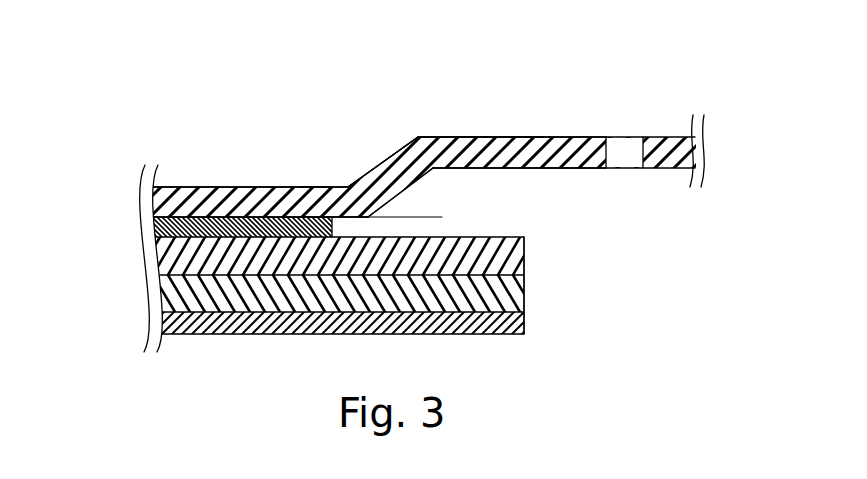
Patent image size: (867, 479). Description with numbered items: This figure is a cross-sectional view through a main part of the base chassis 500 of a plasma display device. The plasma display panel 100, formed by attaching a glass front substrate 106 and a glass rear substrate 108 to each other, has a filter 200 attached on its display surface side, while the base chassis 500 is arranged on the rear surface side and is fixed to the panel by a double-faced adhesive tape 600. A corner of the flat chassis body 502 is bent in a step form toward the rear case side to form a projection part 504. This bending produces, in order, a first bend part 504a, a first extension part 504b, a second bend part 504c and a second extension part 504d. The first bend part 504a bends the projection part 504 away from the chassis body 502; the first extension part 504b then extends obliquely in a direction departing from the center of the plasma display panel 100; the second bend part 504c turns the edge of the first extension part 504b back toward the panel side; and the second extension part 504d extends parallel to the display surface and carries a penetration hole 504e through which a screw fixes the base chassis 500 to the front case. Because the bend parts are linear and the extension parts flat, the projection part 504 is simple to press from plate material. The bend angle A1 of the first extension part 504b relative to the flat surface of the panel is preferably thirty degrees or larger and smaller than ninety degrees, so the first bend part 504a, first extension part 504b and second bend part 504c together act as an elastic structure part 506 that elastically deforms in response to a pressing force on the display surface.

The plasma display panel 100 is at (620, 236).
The front substrate 106 is at (524, 293).
The rear substrate 108 is at (524, 252).
The filter 200 is at (525, 329).
The base chassis 500 is at (274, 100).
The chassis body 502 is at (228, 186).
The projection part 504 is at (565, 57).
The first bend part 504a is at (348, 186).
The first extension part 504b is at (386, 160).
The second bend part 504c is at (413, 137).
The second extension part 504d is at (507, 136).
The penetration hole 504e is at (621, 144).
The elastic structure part 506 is at (543, 68).
The double-faced adhesive tape 600 is at (150, 228).
The bend angle A1 is at (417, 184).